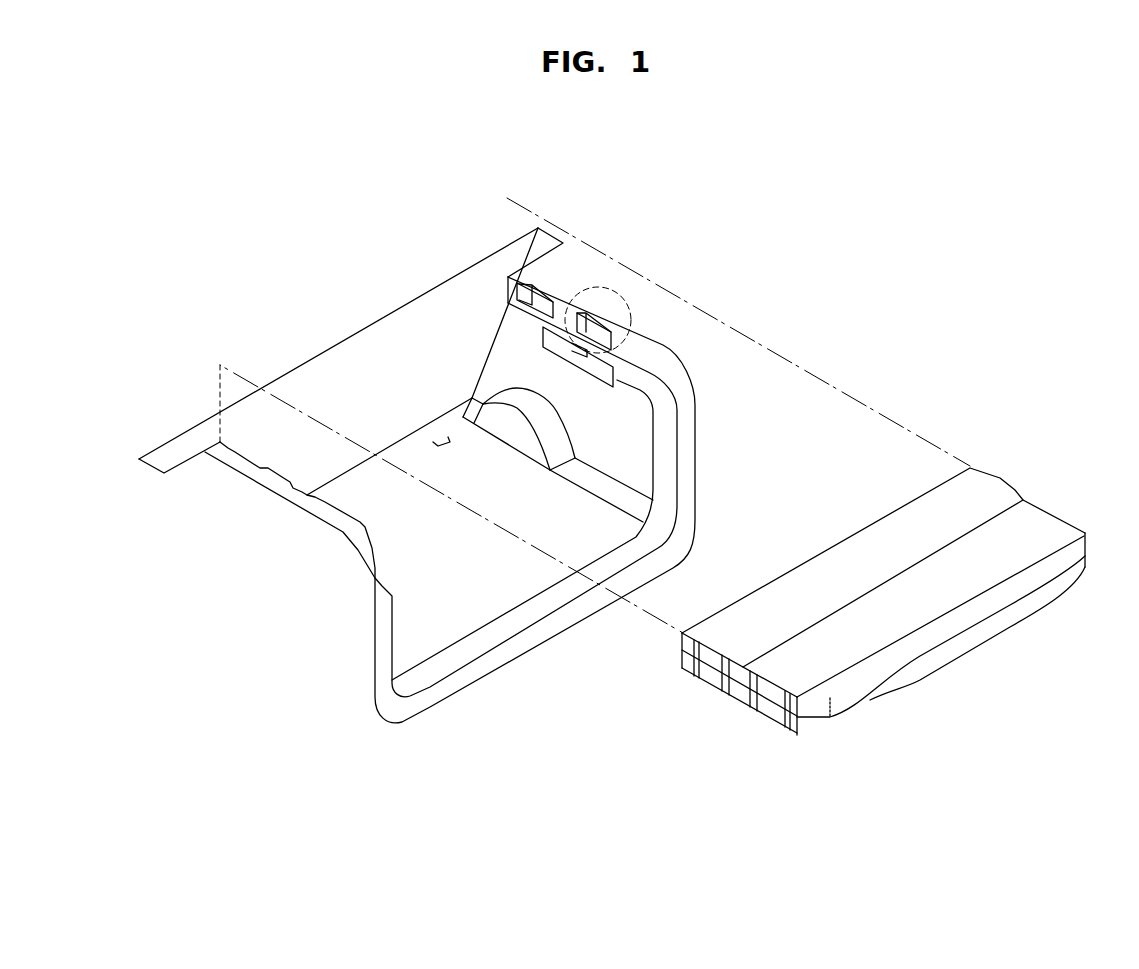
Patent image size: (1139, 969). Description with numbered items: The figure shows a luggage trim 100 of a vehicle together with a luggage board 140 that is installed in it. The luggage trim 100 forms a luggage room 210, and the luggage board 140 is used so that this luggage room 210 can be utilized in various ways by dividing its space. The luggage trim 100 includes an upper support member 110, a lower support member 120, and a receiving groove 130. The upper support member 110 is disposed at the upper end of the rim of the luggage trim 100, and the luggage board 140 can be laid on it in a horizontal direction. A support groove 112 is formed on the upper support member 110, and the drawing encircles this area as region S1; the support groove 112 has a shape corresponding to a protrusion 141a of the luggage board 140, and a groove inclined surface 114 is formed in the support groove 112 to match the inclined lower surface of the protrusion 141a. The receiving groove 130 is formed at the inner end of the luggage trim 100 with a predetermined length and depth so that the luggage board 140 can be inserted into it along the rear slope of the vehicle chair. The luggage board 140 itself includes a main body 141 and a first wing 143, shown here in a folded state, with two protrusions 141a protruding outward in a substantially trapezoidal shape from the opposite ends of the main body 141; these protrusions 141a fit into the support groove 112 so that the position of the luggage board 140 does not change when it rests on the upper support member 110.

The luggage trim 100 is at (706, 250).
The upper support member 110 is at (563, 290).
The support groove 112 is at (540, 290).
The groove inclined surface 114 is at (538, 294).
The lower support member 120 is at (543, 337).
The receiving groove 130 is at (185, 447).
The luggage room 210 is at (442, 440).
The space S1 is at (632, 300).
The luggage board 140 is at (1000, 452).
The main body 141 is at (1050, 540).
The protrusion 141a is at (1005, 480).
The first wing 143 is at (791, 722).